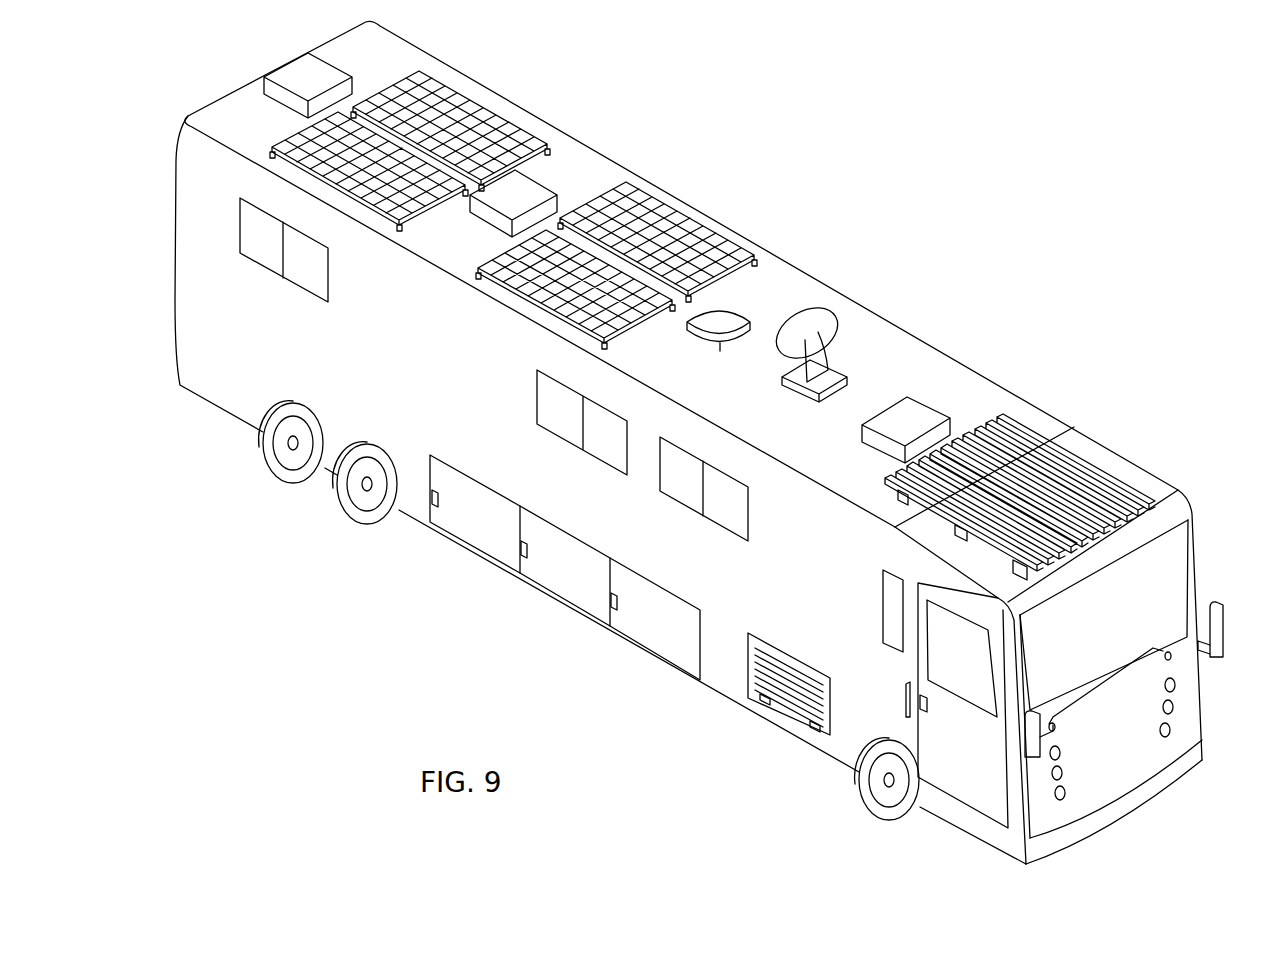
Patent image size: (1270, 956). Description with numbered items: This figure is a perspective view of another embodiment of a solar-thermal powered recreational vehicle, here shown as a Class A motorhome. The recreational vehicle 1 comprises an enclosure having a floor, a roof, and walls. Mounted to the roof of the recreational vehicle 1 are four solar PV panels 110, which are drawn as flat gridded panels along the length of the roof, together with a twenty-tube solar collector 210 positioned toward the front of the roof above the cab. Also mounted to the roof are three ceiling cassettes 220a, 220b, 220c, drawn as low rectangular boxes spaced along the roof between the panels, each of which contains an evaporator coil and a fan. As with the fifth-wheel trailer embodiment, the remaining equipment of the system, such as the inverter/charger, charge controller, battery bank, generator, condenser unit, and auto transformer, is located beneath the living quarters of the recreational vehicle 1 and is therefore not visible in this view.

The recreational vehicle 1 is at (1128, 291).
The solar PV panel 110 is at (503, 117).
The solar collector 210 is at (1115, 478).
The ceiling cassette 220a is at (932, 407).
The ceiling cassette 220b is at (538, 176).
The ceiling cassette 220c is at (342, 72).